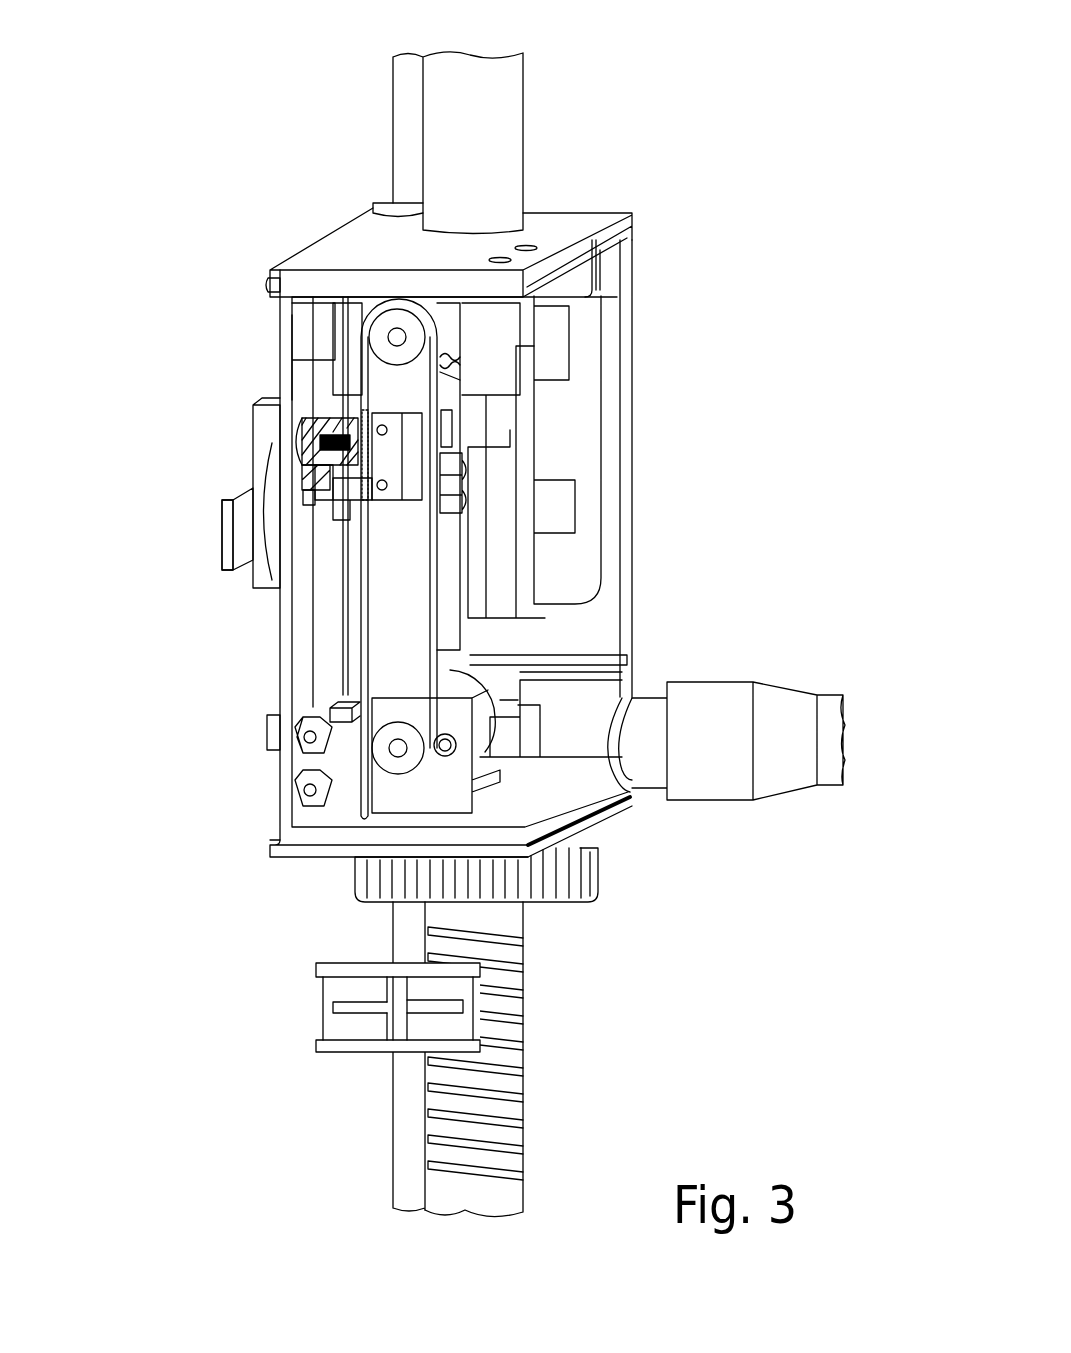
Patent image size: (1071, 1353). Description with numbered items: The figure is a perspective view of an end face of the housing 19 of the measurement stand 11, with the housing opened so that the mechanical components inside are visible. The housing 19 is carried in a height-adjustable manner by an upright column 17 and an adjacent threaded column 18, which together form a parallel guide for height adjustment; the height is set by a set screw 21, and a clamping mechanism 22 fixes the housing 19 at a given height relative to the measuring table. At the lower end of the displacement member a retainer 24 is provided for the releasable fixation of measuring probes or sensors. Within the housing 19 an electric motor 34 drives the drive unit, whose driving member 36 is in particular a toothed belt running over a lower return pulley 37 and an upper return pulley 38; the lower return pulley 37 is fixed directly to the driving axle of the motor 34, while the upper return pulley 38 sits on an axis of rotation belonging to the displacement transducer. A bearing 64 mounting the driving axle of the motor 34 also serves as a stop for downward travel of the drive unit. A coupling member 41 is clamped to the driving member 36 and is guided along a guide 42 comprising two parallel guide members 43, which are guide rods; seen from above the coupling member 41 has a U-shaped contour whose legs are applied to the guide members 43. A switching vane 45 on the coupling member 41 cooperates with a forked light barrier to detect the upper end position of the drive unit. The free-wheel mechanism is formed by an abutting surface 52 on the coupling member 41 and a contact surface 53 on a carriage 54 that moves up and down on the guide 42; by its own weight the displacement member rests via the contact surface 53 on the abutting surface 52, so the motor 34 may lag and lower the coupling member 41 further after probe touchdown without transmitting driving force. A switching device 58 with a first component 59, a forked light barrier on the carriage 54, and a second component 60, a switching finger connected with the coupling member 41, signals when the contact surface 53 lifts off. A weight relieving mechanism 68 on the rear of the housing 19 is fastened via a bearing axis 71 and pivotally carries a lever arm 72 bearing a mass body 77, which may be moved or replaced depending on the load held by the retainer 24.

The measurement stand 11 is at (640, 143).
The upright column 17 is at (395, 1110).
The threaded column 18 is at (505, 1105).
The housing 19 is at (652, 630).
The set screw 21 is at (583, 868).
The clamping mechanism 22 is at (780, 785).
The retainer 24 is at (335, 1030).
The electric motor 34 is at (460, 690).
The driving member 36 is at (432, 550).
The lower return pulley 37 is at (386, 748).
The upper return pulley 38 is at (385, 325).
The coupling member 41 is at (352, 512).
The guide 42 is at (364, 545).
The guide members 43 is at (356, 812).
The switching vane 45 is at (446, 428).
The abutting surface 52 is at (325, 418).
The contact surface 53 is at (322, 440).
The carriage 54 is at (374, 418).
The switching device 58 is at (310, 498).
The first component 59 is at (304, 478).
The second component 60 is at (330, 492).
The bearing 64 is at (380, 708).
The weight relieving mechanism 68 is at (202, 503).
The bearing axis 71 is at (268, 470).
The lever arm 72 is at (222, 515).
The mass body 77 is at (262, 440).